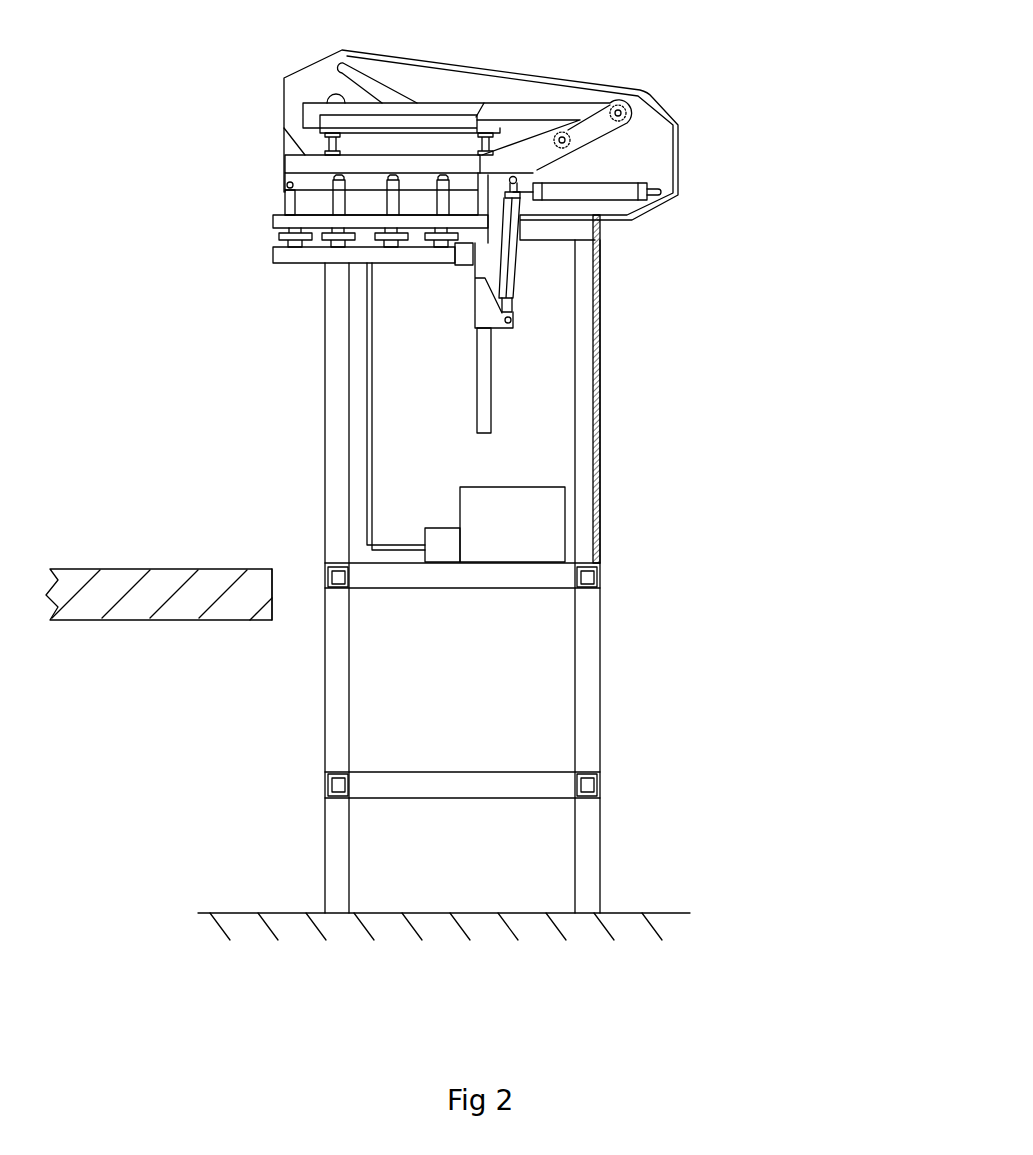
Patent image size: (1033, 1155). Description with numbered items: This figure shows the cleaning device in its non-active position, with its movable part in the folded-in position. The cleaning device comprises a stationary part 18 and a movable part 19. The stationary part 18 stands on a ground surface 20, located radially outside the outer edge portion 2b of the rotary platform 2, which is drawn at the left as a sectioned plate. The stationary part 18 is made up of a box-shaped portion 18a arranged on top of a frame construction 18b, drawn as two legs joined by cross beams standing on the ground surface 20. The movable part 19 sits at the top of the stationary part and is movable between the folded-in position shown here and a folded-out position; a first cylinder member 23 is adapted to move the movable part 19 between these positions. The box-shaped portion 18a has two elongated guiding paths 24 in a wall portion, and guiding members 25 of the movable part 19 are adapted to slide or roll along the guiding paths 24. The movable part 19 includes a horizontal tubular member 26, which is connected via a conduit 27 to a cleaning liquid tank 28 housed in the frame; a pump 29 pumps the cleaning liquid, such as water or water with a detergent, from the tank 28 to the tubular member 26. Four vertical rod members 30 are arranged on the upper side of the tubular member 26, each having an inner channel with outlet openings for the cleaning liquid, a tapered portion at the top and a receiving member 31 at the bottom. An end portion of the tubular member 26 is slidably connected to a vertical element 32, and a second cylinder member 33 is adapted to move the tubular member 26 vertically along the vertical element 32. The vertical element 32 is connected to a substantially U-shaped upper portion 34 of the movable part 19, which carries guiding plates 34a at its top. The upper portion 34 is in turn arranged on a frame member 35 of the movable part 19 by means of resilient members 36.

The rotary platform 2 is at (157, 583).
The outer edge portion 2b is at (272, 588).
The stationary part 18 is at (526, 564).
The box-shaped portion 18a is at (600, 302).
The frame construction 18b is at (588, 683).
The movable part 19 is at (203, 150).
The ground surface 20 is at (627, 912).
The first cylinder member 23 is at (617, 193).
The guiding paths 24 is at (507, 140).
The guiding members 25 is at (567, 136).
The tubular member 26 is at (293, 253).
The conduit 27 is at (370, 450).
The cleaning liquid tank 28 is at (497, 522).
The pump 29 is at (443, 545).
The rod members 30 is at (338, 205).
The receiving member 31 is at (330, 240).
The vertical element 32 is at (485, 378).
The second cylinder member 33 is at (507, 258).
The upper portion 34 is at (422, 117).
The guiding plates 34a is at (350, 110).
The frame member 35 is at (305, 165).
The resilient members 36 is at (305, 128).